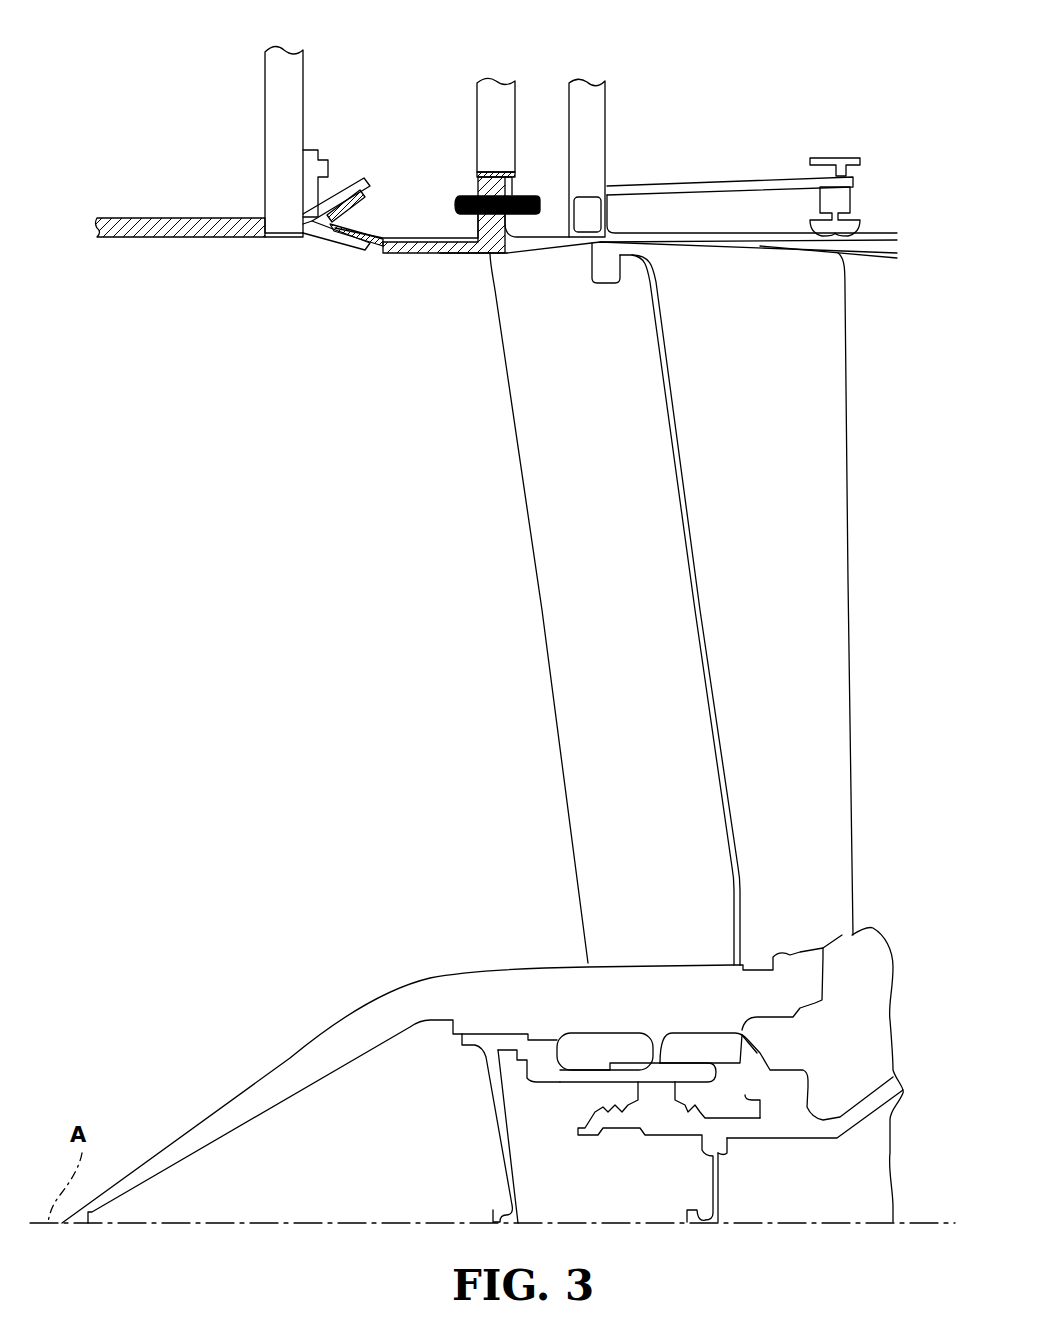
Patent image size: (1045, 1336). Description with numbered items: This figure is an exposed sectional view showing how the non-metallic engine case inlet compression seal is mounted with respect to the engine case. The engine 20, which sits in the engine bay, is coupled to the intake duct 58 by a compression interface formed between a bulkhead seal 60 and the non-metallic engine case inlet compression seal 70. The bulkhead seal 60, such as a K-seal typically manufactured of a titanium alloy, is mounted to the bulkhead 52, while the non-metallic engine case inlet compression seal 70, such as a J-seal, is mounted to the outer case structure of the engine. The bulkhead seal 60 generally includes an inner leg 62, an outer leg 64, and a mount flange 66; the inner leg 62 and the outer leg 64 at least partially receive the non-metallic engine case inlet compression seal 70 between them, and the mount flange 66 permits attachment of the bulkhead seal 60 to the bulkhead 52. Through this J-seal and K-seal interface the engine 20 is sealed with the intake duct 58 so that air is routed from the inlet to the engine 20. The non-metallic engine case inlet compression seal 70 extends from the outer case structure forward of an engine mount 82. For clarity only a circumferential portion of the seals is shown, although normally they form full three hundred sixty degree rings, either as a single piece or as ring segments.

The engine 20 is at (849, 146).
The bulkhead 52 is at (293, 80).
The intake duct 58 is at (145, 210).
The bulkhead seal 60 is at (326, 258).
The inner leg 62 is at (313, 237).
The outer leg 64 is at (350, 183).
The mount flange 66 is at (313, 150).
The non-metallic engine case inlet compression seal 70 is at (382, 211).
The engine mount 82 is at (608, 74).